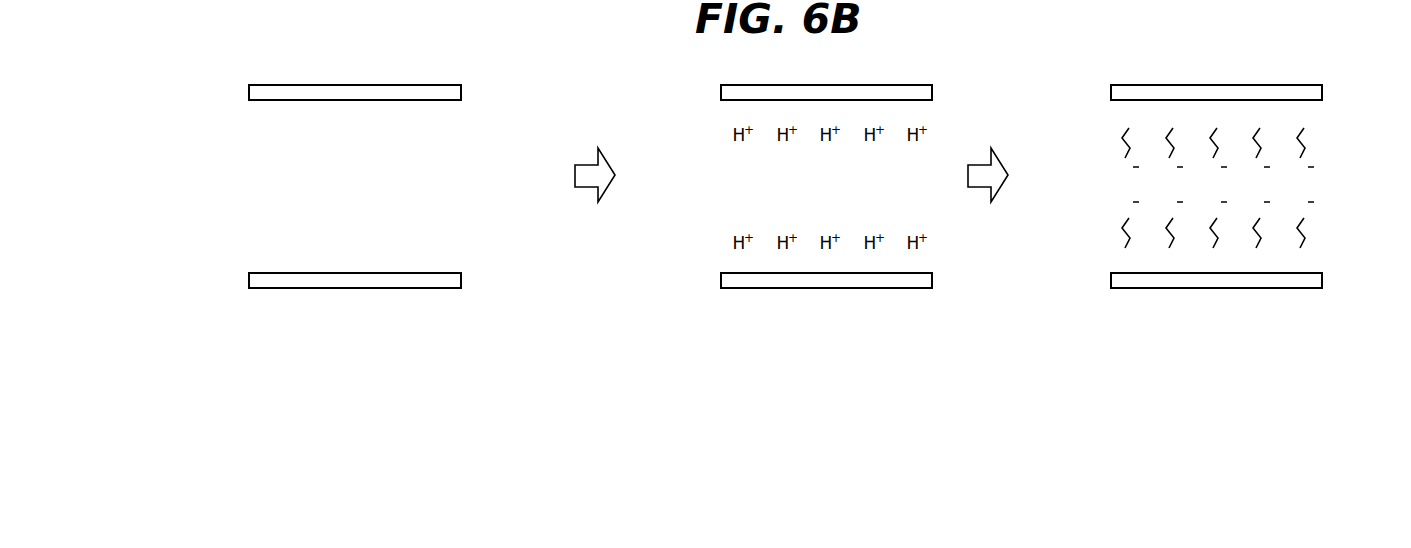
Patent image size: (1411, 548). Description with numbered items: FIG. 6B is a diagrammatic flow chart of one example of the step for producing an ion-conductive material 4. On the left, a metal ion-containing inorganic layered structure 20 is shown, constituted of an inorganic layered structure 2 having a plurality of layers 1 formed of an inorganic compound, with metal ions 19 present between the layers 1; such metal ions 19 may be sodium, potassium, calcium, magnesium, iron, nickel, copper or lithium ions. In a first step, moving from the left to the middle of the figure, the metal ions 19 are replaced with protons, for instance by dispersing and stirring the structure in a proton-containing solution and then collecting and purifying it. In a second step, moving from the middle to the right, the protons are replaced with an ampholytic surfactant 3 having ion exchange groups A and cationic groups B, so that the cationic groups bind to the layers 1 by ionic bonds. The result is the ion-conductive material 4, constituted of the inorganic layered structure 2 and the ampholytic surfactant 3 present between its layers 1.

The layers formed of an inorganic compound 1 is at (249, 92).
The inorganic layered structure 2 is at (195, 235).
The metal ions 19 is at (460, 136).
The metal ion-containing inorganic layered structure 20 is at (520, 294).
The ampholytic surfactant 3 is at (1308, 137).
The ion-conductive material 4 is at (1355, 296).